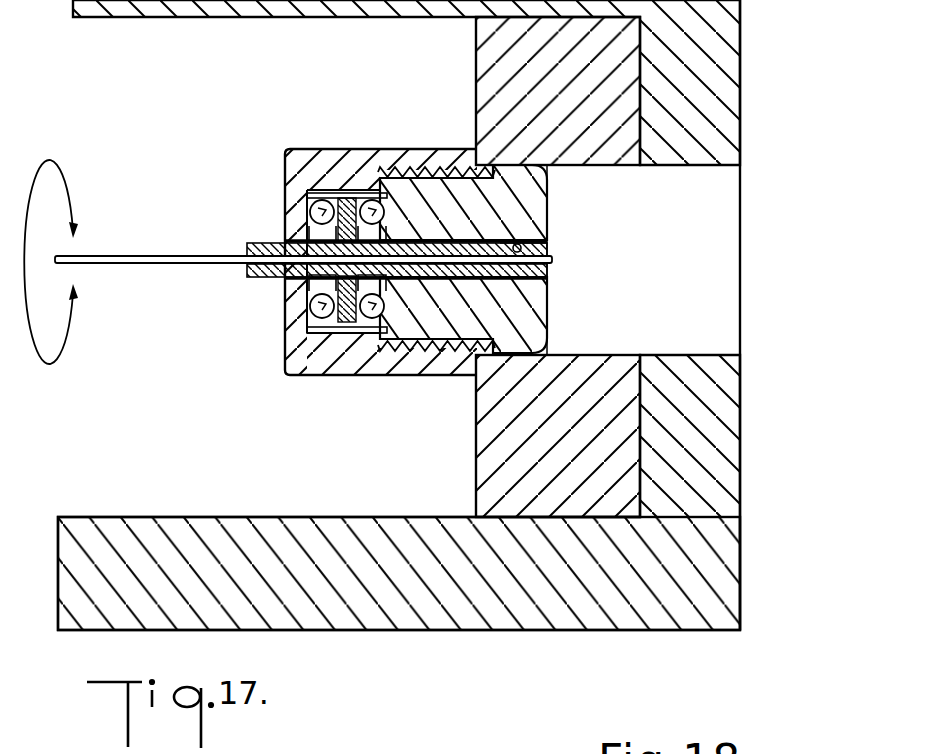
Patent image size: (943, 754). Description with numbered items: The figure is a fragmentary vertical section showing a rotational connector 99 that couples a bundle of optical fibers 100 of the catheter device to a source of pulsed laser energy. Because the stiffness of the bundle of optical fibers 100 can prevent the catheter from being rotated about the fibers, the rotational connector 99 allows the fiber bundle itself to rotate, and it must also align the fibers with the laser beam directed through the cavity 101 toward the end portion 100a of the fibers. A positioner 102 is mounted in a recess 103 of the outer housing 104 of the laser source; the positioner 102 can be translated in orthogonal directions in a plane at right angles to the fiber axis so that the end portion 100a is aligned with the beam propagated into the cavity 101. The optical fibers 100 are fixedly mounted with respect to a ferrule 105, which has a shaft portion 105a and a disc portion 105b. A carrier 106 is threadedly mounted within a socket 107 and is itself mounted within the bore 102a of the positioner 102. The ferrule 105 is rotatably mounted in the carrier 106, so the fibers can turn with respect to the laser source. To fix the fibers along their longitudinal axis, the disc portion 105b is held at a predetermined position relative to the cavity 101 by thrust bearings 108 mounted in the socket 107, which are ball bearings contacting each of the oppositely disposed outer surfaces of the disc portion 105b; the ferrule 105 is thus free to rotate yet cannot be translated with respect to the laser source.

The rotational connector 99 is at (360, 391).
The bundle of optical fibers 100 is at (139, 255).
The end portion of the optical fibers 100a is at (553, 258).
The cavity 101 is at (674, 297).
The positioner 102 is at (462, 489).
The bore of positioner 102a is at (627, 167).
The recess 103 is at (337, 516).
The outer housing 104 is at (565, 605).
The ferrule 105 is at (421, 345).
The shaft portion 105a is at (530, 236).
The disc portion 105b is at (315, 335).
The carrier 106 is at (421, 172).
The socket 107 is at (333, 152).
The thrust bearings 108 is at (307, 193).